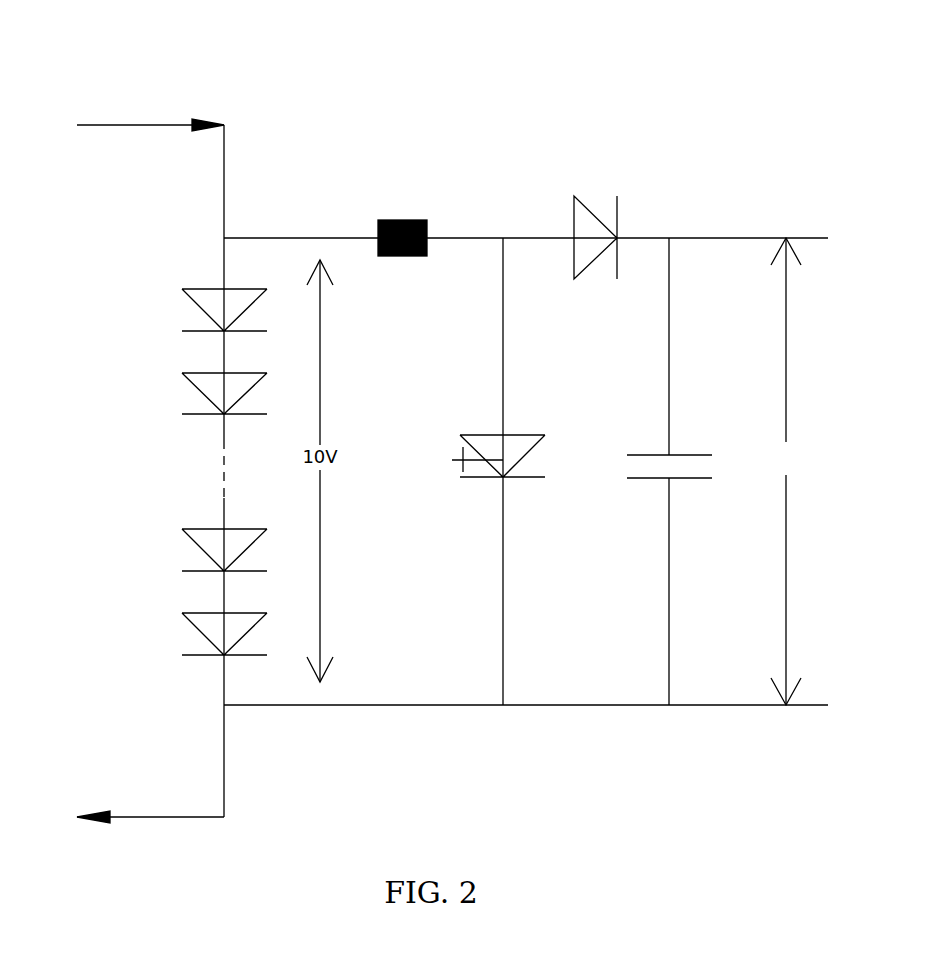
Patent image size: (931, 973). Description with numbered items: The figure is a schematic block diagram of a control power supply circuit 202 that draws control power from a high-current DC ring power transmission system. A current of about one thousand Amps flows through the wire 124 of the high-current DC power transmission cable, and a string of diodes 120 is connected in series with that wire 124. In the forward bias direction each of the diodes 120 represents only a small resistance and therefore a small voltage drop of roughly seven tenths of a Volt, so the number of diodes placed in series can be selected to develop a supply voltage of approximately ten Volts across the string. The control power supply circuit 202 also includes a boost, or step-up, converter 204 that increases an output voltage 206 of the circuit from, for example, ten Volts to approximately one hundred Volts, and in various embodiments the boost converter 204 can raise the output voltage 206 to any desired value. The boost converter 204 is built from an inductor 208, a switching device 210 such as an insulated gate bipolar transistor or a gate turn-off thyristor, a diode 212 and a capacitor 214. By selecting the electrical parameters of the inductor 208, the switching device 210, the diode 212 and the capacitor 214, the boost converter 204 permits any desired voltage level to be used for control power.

The diodes 120 is at (153, 444).
The wire 124 is at (150, 125).
The control power supply circuit 202 is at (370, 72).
The boost converter 204 is at (546, 184).
The output voltage 206 is at (786, 471).
The inductor 208 is at (417, 220).
The switching device 210 is at (527, 434).
The diode 212 is at (587, 268).
The capacitor 214 is at (694, 454).